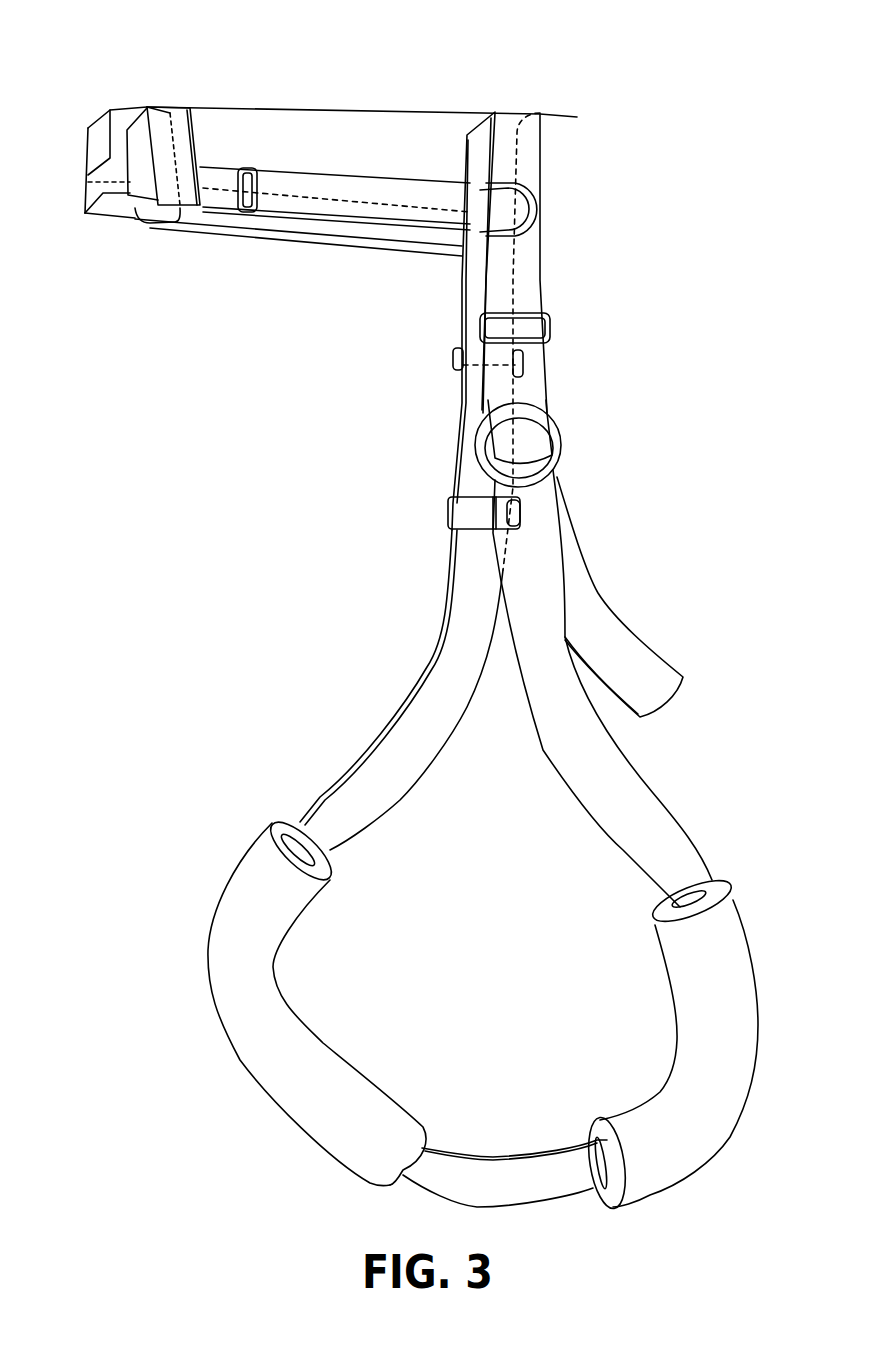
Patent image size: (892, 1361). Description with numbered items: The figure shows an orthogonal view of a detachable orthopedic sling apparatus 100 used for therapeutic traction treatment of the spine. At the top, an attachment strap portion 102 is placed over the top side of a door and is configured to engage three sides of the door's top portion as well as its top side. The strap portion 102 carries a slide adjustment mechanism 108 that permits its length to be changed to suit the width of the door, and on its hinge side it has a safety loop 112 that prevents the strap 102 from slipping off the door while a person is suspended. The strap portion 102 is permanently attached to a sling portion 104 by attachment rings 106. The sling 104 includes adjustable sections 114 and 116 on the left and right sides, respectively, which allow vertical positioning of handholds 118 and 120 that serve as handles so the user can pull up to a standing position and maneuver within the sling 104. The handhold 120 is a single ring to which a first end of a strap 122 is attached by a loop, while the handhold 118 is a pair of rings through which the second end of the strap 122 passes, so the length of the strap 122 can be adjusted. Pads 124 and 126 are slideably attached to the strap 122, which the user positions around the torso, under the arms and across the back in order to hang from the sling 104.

The apparatus 100 is at (633, 390).
The attachment strap portion 102 is at (370, 152).
The sling portion 104 is at (657, 767).
The attachment rings 106 is at (540, 207).
The slide adjustment mechanism 108 is at (245, 168).
The safety loop 112 is at (157, 103).
The adjustable section 114 is at (490, 295).
The adjustable section 116 is at (457, 402).
The handhold 118 is at (477, 442).
The handhold 120 is at (450, 515).
The strap 122 is at (370, 755).
The pad 124 is at (320, 1086).
The pad 126 is at (740, 1093).